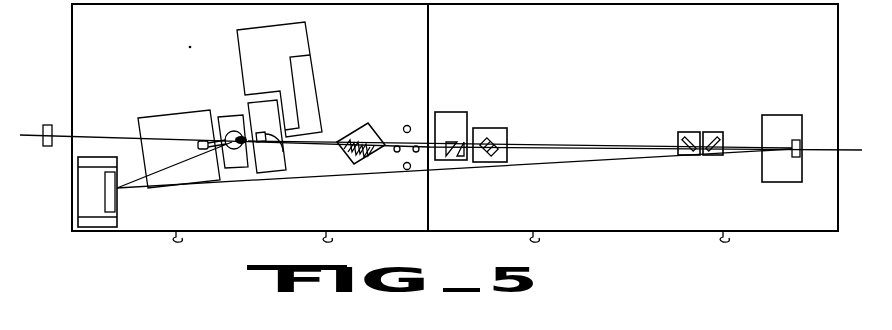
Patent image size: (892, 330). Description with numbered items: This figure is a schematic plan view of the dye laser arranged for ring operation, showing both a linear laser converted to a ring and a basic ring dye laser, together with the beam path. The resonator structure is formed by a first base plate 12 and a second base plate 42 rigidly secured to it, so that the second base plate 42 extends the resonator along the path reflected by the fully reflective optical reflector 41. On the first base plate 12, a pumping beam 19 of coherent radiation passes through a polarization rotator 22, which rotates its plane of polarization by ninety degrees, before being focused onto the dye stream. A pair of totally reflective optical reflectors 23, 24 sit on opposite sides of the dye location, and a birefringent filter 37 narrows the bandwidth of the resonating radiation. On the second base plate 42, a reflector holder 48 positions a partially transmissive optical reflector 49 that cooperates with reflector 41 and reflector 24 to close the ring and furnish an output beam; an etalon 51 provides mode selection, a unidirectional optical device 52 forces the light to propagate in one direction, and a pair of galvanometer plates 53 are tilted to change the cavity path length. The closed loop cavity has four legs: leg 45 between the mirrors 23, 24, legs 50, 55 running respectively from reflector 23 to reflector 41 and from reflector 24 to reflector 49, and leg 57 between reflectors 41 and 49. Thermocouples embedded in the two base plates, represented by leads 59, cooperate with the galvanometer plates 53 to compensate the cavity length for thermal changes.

The first base plate 12 is at (158, 58).
The beam of coherent radiation 19 is at (101, 134).
The polarization rotator 22 is at (48, 125).
The optical reflector 23 is at (287, 152).
The optical reflector 24 is at (198, 145).
The birefringent filter 37 is at (360, 130).
The fully reflective optical reflector 41 is at (117, 202).
The second base plate 42 is at (505, 58).
The leg 45 is at (219, 136).
The reflector holder 48 is at (778, 120).
The partially transmissive optical reflector 49 is at (792, 158).
The leg 50 is at (186, 162).
The etalon 51 is at (455, 117).
The optical device 52 is at (495, 132).
The galvanometer plates 53 is at (708, 132).
The leg 55 is at (588, 144).
The leg 57 is at (336, 178).
The leads 59 is at (183, 239).